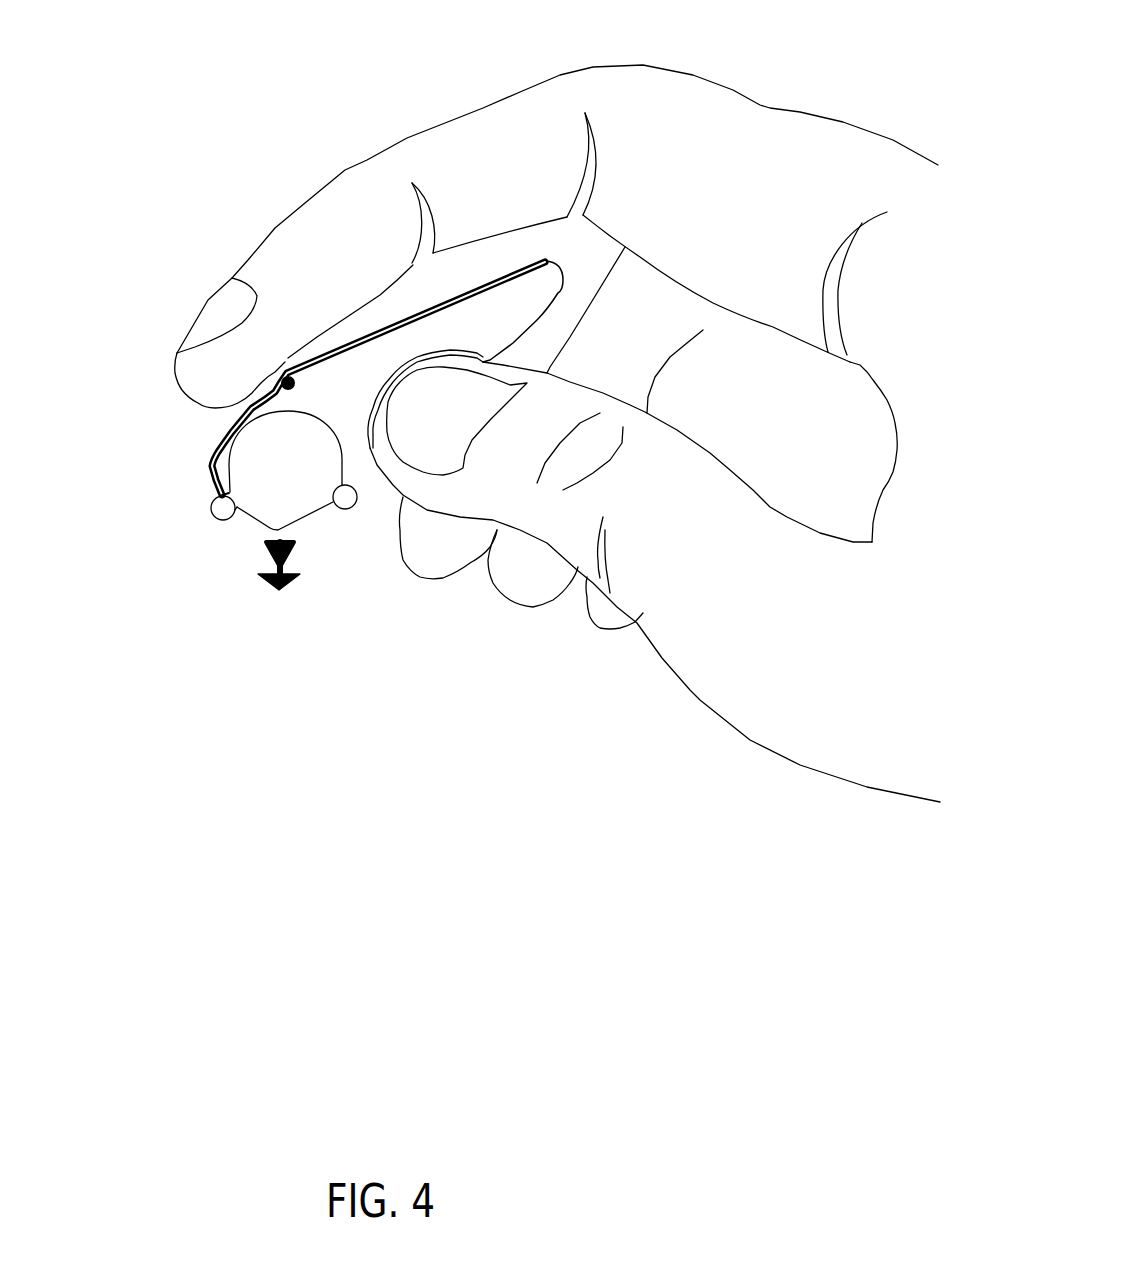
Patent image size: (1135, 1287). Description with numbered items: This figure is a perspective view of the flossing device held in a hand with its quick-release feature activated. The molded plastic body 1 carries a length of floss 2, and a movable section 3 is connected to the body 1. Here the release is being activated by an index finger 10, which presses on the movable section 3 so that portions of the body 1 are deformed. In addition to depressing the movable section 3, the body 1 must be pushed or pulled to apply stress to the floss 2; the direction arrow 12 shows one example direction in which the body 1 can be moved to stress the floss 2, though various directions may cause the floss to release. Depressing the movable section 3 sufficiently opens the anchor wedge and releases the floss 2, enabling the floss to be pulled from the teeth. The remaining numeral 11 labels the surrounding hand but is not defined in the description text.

The body 1 is at (355, 467).
The floss 2 is at (262, 523).
The movable section 3 is at (213, 435).
The index finger 10 is at (270, 227).
The hand 11 is at (715, 715).
The direction arrow 12 is at (267, 583).